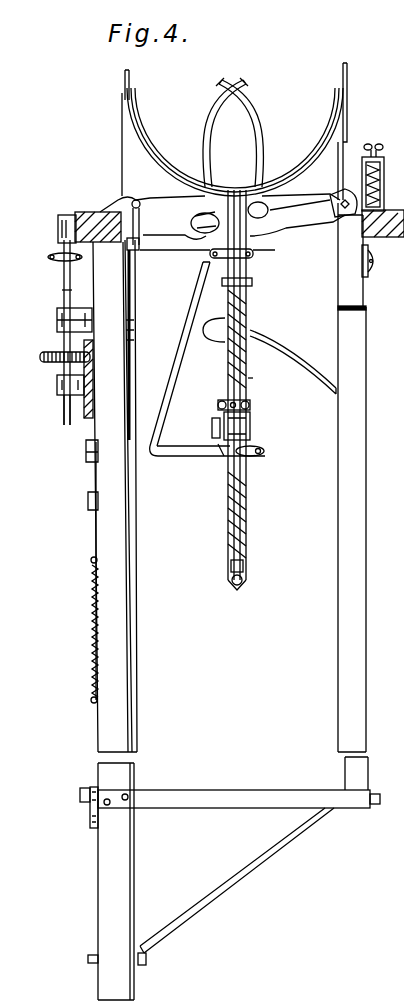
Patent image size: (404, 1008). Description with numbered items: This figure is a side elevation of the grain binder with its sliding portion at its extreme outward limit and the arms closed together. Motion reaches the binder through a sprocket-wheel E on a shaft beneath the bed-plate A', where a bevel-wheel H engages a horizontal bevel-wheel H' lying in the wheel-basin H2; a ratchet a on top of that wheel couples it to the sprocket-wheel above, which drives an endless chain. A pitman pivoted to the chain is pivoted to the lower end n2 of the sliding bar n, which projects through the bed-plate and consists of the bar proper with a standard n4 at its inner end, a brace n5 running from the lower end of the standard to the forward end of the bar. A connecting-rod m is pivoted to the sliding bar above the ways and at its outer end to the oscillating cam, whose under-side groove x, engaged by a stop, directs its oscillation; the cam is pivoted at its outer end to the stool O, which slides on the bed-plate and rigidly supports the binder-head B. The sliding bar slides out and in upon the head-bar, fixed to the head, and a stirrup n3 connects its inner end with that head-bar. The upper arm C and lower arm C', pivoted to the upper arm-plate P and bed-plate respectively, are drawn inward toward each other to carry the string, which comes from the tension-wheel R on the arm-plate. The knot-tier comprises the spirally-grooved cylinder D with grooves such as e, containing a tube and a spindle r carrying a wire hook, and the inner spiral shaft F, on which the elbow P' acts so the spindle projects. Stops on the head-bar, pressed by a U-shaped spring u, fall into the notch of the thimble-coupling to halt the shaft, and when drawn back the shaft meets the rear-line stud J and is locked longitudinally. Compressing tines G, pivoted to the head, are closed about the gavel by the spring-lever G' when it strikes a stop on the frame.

The binder-head B is at (234, 131).
The compressing arms or tines G is at (228, 132).
The upper arm C is at (210, 226).
The lower arm C' is at (300, 212).
The stool O is at (133, 222).
The tension-wheel R is at (384, 180).
The ratchet a is at (377, 261).
The right standard A is at (353, 477).
The upper arm-plate P is at (334, 260).
The bed-plate A' is at (115, 496).
The spindle r is at (139, 290).
The sprocket-wheel E is at (40, 268).
The groove e is at (60, 293).
The bevel-wheel H is at (53, 363).
The wheel-basin H2 is at (75, 383).
The bevel-wheel H' is at (71, 410).
The spirally-grooved cylinder D is at (226, 353).
The connecting-rod m is at (256, 379).
The U-shaped spring u is at (212, 428).
The spirally-grooved shaft F is at (255, 510).
The rear-line stud J is at (248, 598).
The spring-lever G' is at (293, 362).
The brace n5 is at (184, 340).
The standard n4 is at (190, 448).
The elbow P' is at (256, 448).
The stirrup n3 is at (262, 458).
The sliding bar n is at (214, 459).
The lower end of the sliding bar n2 is at (90, 592).
The groove x is at (241, 867).